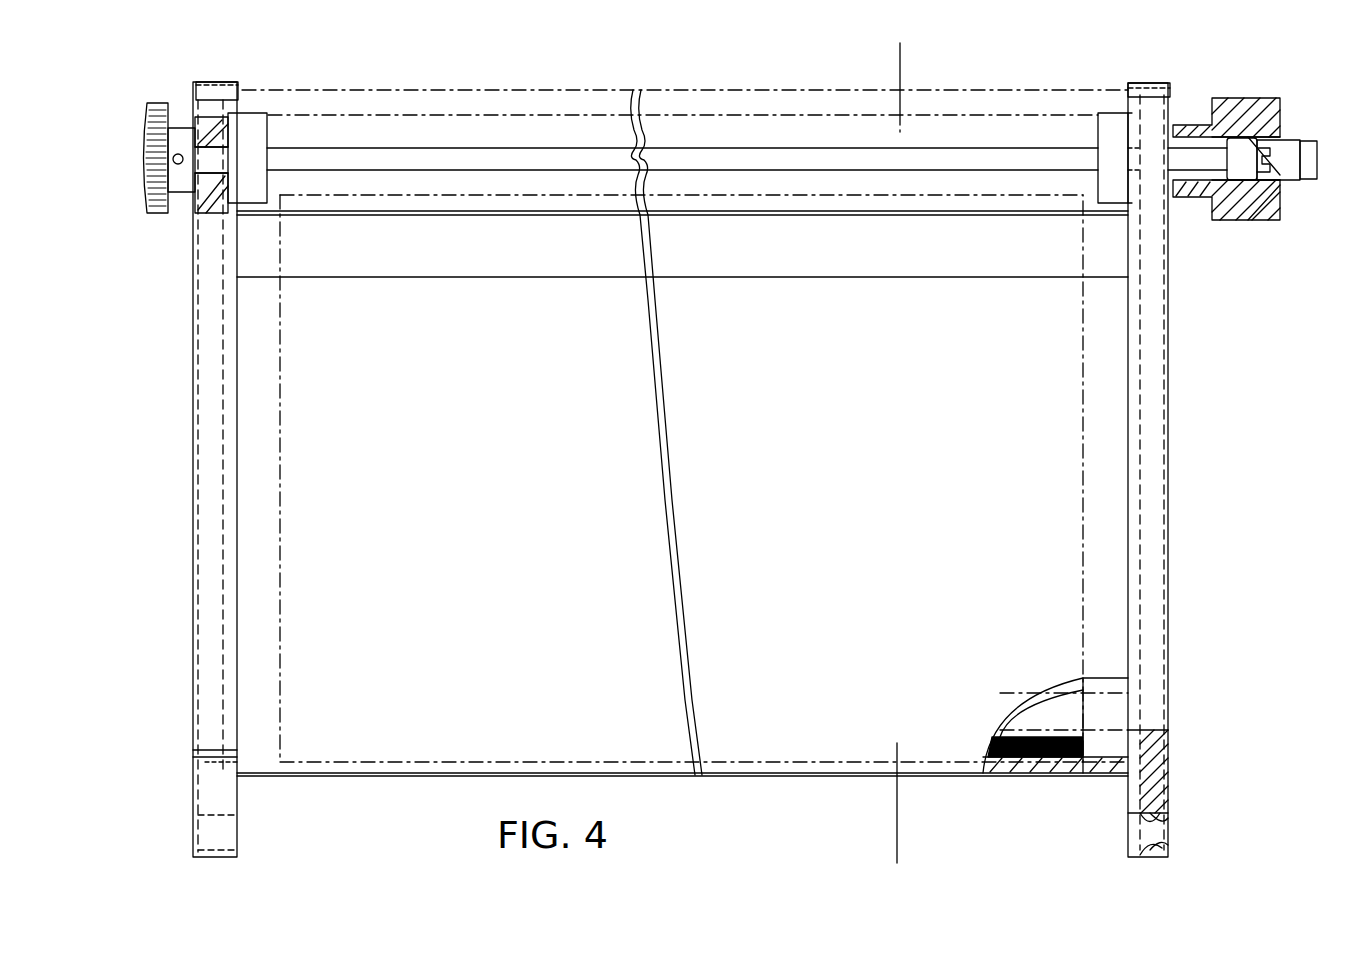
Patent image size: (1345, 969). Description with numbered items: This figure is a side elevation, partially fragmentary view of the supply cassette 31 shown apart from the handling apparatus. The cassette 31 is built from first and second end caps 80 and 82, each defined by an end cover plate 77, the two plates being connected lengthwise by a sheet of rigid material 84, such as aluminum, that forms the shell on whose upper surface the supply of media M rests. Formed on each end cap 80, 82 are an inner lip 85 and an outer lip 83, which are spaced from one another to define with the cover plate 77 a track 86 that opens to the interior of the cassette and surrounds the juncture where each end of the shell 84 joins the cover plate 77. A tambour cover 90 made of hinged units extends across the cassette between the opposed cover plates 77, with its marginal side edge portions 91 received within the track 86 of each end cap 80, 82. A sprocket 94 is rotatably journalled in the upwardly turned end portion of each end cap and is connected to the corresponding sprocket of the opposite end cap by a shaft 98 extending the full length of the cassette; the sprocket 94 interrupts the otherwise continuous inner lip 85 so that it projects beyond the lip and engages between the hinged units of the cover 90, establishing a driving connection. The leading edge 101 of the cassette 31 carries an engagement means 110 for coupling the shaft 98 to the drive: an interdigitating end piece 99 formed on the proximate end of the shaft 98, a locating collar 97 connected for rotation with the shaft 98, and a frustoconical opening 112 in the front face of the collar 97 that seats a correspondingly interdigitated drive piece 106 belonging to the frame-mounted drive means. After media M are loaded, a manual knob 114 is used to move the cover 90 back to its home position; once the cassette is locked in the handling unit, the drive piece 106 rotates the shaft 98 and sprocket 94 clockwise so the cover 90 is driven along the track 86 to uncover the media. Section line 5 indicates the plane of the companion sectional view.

The supply cassette 31 is at (1010, 82).
The end cover plate 77 is at (193, 412).
The first end cap 80 is at (193, 312).
The second end cap 82 is at (1168, 402).
The outer lip 83 is at (1168, 844).
The sheet of rigid material 84 is at (1035, 776).
The inner lip 85 is at (1166, 815).
The track 86 is at (1138, 822).
The cover 90 is at (850, 88).
The marginal side edge portion 91 is at (220, 80).
The sprocket 94 is at (268, 132).
The locating collar 97 is at (1230, 220).
The shaft 98 is at (552, 150).
The interdigitating end piece 99 is at (1248, 138).
The leading edge 101 is at (1168, 338).
The drive piece 106 is at (1290, 140).
The engagement means 110 is at (1258, 224).
The frustoconical opening 112 is at (1270, 188).
The manual knob 114 is at (172, 208).
The media M is at (1012, 735).
The section line 5- 5 is at (957, 50).